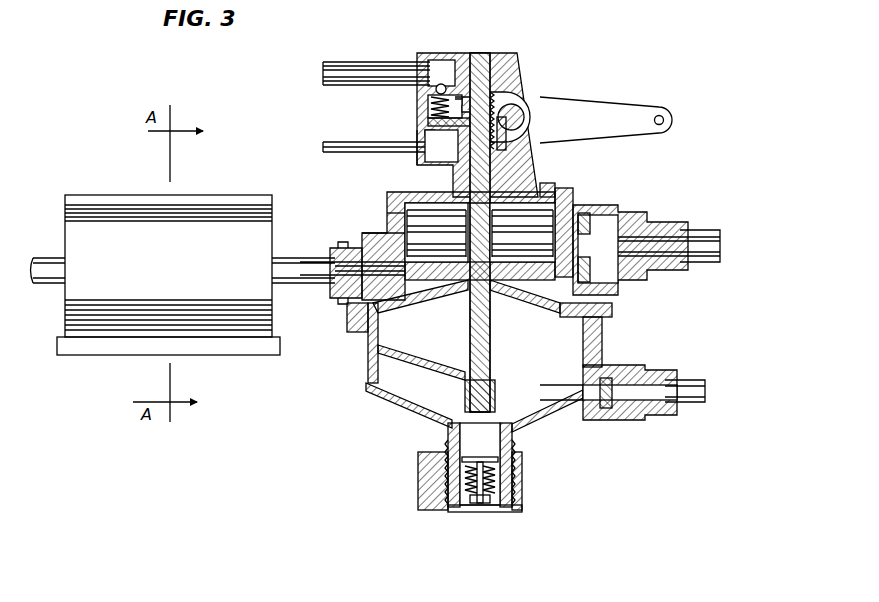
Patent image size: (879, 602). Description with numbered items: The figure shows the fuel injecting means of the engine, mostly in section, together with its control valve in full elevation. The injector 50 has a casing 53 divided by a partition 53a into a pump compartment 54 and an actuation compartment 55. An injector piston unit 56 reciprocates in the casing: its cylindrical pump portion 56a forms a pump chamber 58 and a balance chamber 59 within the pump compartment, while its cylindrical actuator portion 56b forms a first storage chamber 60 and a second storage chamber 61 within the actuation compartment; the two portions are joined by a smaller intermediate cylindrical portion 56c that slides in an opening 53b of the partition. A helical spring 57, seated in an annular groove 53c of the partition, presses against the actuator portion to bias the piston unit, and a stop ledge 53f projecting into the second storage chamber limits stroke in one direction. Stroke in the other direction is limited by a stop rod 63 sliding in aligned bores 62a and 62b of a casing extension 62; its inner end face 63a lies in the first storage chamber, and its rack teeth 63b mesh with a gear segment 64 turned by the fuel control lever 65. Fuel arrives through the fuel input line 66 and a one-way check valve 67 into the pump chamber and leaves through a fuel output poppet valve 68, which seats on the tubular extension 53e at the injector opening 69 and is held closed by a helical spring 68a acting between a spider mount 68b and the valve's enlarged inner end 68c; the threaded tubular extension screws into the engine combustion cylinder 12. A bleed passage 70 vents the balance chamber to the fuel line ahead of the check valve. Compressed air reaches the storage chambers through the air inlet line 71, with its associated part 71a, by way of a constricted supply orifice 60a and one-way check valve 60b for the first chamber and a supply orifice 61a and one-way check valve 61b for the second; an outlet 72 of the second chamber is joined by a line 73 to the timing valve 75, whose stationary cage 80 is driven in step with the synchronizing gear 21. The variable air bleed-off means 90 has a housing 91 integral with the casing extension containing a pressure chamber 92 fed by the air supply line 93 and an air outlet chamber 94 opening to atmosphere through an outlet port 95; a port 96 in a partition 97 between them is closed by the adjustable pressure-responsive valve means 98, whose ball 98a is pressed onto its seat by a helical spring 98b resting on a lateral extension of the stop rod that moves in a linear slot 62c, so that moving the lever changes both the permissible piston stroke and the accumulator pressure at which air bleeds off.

The engine combustion cylinder 12 is at (425, 480).
The synchronizing gear 21 is at (48, 263).
The injector 50 is at (522, 480).
The casing 53 is at (378, 402).
The partition 53a is at (423, 324).
The opening 53b is at (518, 301).
The annular groove 53c is at (370, 308).
The tubular extension 53e is at (520, 490).
The stop ledge 53f is at (348, 312).
The pump compartment 54 is at (368, 366).
The actuation compartment 55 is at (390, 215).
The injector piston unit 56 is at (480, 233).
The cylindrical pump portion 56a is at (440, 378).
The cylindrical actuator portion 56b is at (440, 290).
The intermediate cylindrical portion 56c is at (491, 322).
The helical spring 57 is at (395, 238).
The pump chamber 58 is at (395, 375).
The balance chamber 59 is at (368, 340).
The first storage chamber 60 is at (402, 200).
The supply orifice 60a is at (566, 200).
The one-way check valve 60b is at (600, 207).
The second storage chamber 61 is at (440, 215).
The supply orifice 61a is at (562, 275).
The one-way check valve 61b is at (600, 270).
The extension 62 is at (523, 73).
The bore 62a is at (466, 90).
The bore 62b is at (540, 162).
The linear slot 62c is at (512, 100).
The stop rod 63 is at (600, 106).
The inner end face 63a is at (550, 186).
The rack teeth 63b is at (508, 72).
The gear segment 64 is at (524, 117).
The fuel control lever 65 is at (658, 152).
The fuel input line 66 is at (667, 405).
The one-way check valve 67 is at (605, 402).
The fuel output poppet valve 68 is at (480, 506).
The helical spring 68a is at (504, 470).
The spider mount 68b is at (452, 506).
The enlarged inner end 68c is at (488, 459).
The injector opening 69 is at (514, 507).
The bleed passage 70 is at (598, 350).
The air inlet line 71 is at (702, 252).
The inlet bore 71a is at (681, 238).
The outlet 72 is at (332, 284).
The line 73 is at (284, 258).
The timing valve 75 is at (258, 357).
The stationary cage 80 is at (238, 207).
The variable air bleed-off means 90 is at (427, 48).
The housing 91 is at (420, 112).
The pressure chamber 92 is at (441, 60).
The air supply line 93 is at (347, 62).
The air outlet chamber 94 is at (438, 150).
The outlet port 95 is at (328, 143).
The port 96 is at (420, 58).
The partition 97 is at (462, 70).
The adjustable pressure-responsive valve means 98 is at (432, 112).
The ball 98a is at (430, 99).
The helical spring 98b is at (425, 133).